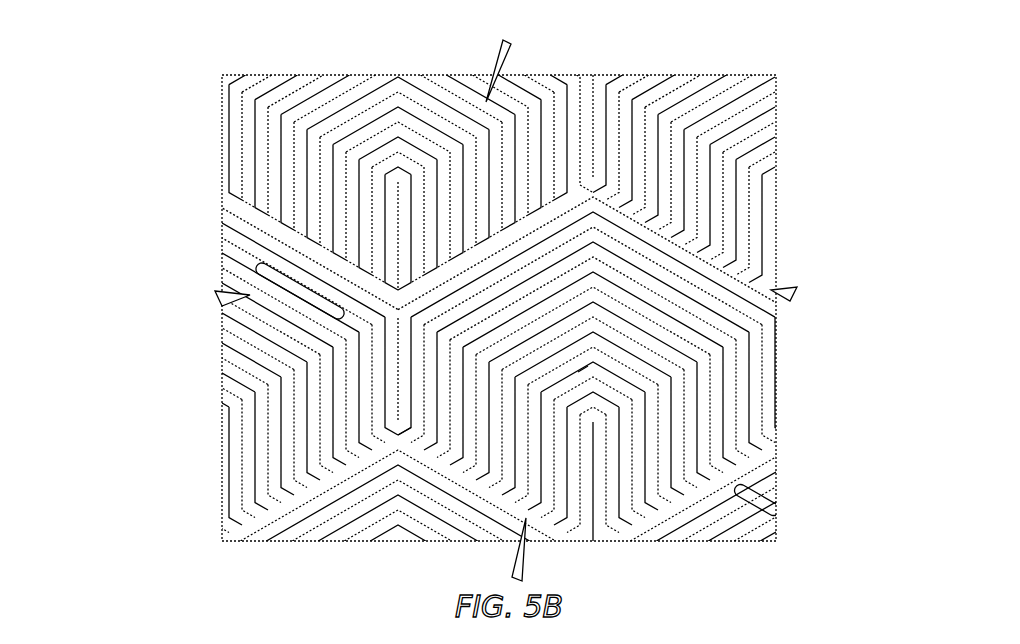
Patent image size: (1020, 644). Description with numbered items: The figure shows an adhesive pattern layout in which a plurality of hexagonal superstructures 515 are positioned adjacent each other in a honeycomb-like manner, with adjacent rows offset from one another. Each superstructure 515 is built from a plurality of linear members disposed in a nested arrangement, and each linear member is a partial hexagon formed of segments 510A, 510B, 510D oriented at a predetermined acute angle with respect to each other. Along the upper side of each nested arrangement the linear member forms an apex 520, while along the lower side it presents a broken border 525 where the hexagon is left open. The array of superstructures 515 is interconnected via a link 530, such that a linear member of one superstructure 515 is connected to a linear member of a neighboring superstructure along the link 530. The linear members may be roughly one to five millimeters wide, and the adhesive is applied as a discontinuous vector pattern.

The segment 510A is at (548, 483).
The segment 510B is at (578, 372).
The segment 510D is at (634, 466).
The superstructure 515 is at (252, 231).
The apex 520 is at (578, 372).
The broken border 525 is at (414, 455).
The link 530 is at (397, 434).